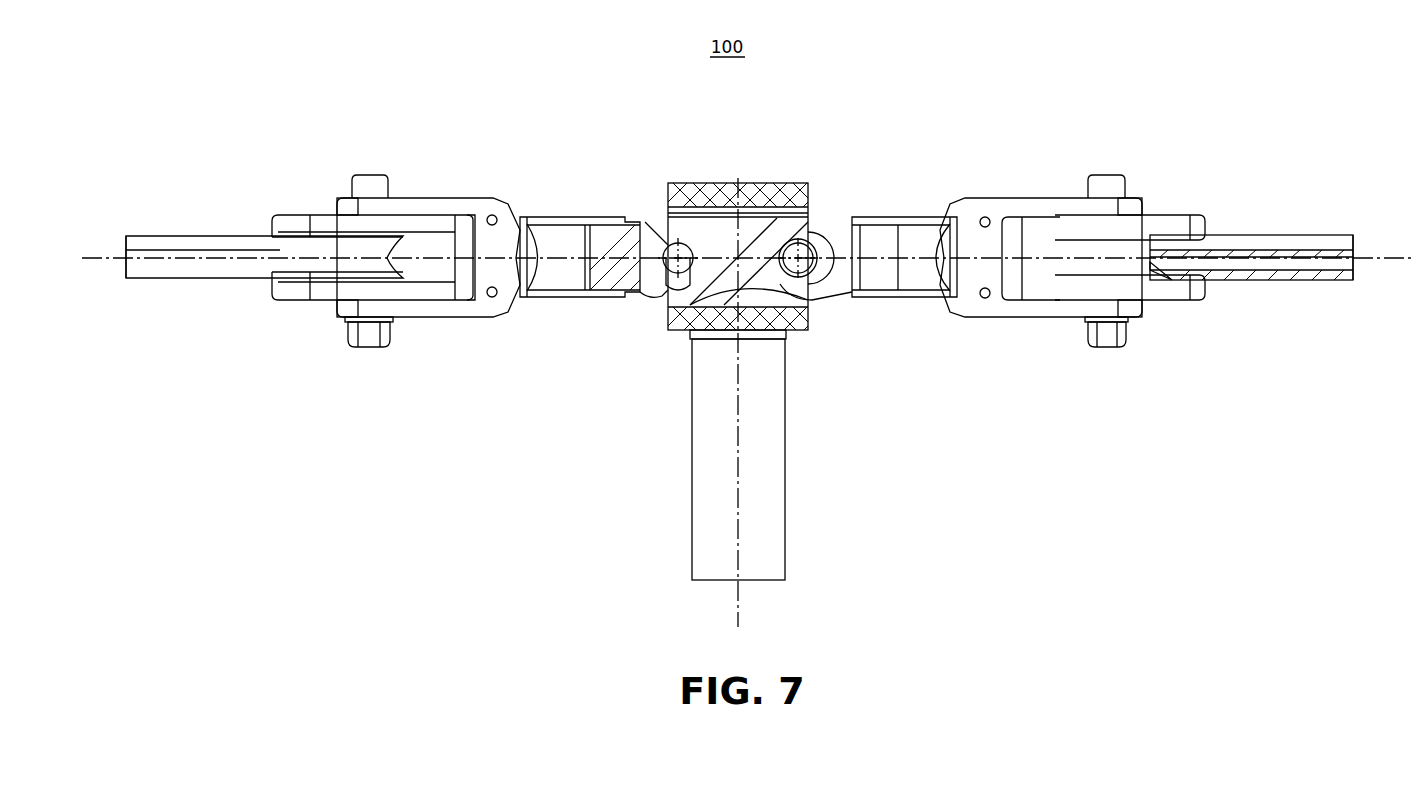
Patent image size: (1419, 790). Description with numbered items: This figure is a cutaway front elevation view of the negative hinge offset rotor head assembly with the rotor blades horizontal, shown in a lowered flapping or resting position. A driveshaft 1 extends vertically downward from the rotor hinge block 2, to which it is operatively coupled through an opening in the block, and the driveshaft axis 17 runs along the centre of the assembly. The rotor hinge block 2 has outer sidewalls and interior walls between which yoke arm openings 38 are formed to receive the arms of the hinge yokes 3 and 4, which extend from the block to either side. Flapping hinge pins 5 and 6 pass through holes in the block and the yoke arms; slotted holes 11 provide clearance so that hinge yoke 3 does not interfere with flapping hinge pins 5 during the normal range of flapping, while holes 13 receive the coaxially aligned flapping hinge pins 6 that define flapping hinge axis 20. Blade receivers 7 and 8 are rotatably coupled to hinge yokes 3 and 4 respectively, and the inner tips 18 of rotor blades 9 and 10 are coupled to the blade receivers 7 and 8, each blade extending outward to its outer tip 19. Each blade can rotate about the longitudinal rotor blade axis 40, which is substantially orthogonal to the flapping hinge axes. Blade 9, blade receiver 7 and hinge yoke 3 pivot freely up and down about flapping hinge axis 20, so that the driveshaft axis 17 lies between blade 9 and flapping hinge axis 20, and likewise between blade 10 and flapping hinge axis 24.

The driveshaft 1 is at (788, 488).
The rotor hinge block 2 is at (742, 182).
The hinge yoke 3 is at (568, 215).
The hinge yoke 4 is at (903, 215).
The flapping hinge pin 5 is at (673, 260).
The flapping hinge pin 6 is at (803, 259).
The blade receiver 7 is at (440, 196).
The blade receiver 8 is at (1040, 197).
The rotor blade 9 is at (215, 235).
The rotor blade 10 is at (1270, 234).
The slotted hole 11 is at (670, 272).
The hole 13 is at (838, 288).
The driveshaft axis 17 is at (742, 598).
The inner tip 18 is at (298, 246).
The outer tip 19 is at (127, 234).
The flapping hinge axis 20 is at (808, 280).
The flapping hinge axis 24 is at (655, 291).
The yoke arm opening 38 is at (692, 219).
The longitudinal rotor blade axis 40 is at (118, 262).